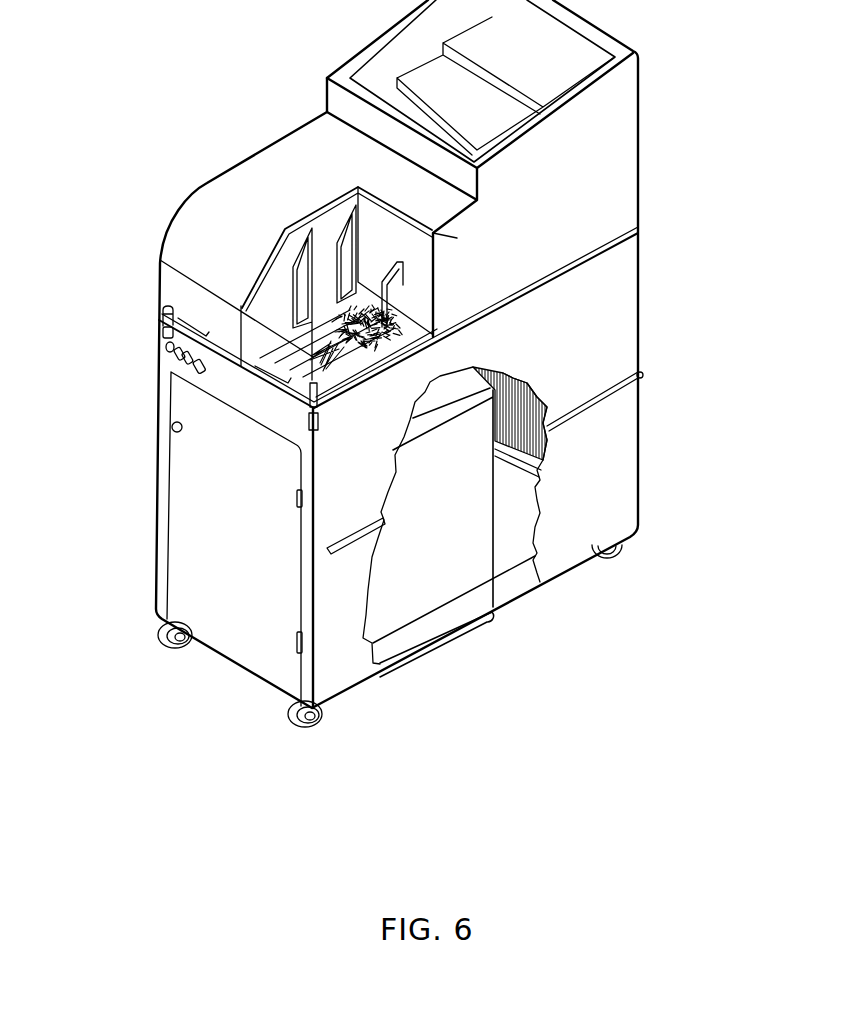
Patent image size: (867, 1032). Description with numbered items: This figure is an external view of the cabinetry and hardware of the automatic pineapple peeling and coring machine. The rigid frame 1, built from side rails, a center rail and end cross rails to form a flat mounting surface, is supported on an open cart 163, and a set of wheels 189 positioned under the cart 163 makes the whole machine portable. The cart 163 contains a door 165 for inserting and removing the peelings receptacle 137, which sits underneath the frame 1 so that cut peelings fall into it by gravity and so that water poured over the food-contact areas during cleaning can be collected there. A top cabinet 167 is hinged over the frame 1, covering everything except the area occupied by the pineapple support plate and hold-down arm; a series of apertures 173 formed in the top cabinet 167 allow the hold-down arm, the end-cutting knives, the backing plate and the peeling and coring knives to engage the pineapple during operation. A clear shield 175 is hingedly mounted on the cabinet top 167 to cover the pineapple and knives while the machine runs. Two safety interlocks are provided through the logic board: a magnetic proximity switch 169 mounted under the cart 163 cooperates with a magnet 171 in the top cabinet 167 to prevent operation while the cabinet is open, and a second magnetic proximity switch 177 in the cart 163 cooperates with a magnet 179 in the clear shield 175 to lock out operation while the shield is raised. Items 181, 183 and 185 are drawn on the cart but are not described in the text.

The frame 1 is at (443, 350).
The receptacle 137 is at (470, 563).
The open cart 163 is at (623, 288).
The door 165 is at (186, 568).
The top cabinet 167 is at (292, 153).
The magnetic proximity switch 169 is at (165, 333).
The magnet 171 is at (167, 307).
The apertures 173 is at (440, 240).
The clear shield 175 is at (455, 238).
The magnetic proximity switch 177 is at (320, 427).
The magnet 179 is at (320, 383).
The switch 181 is at (178, 357).
The switch 183 is at (168, 346).
The switch 185 is at (197, 372).
The wheels 189 is at (618, 548).